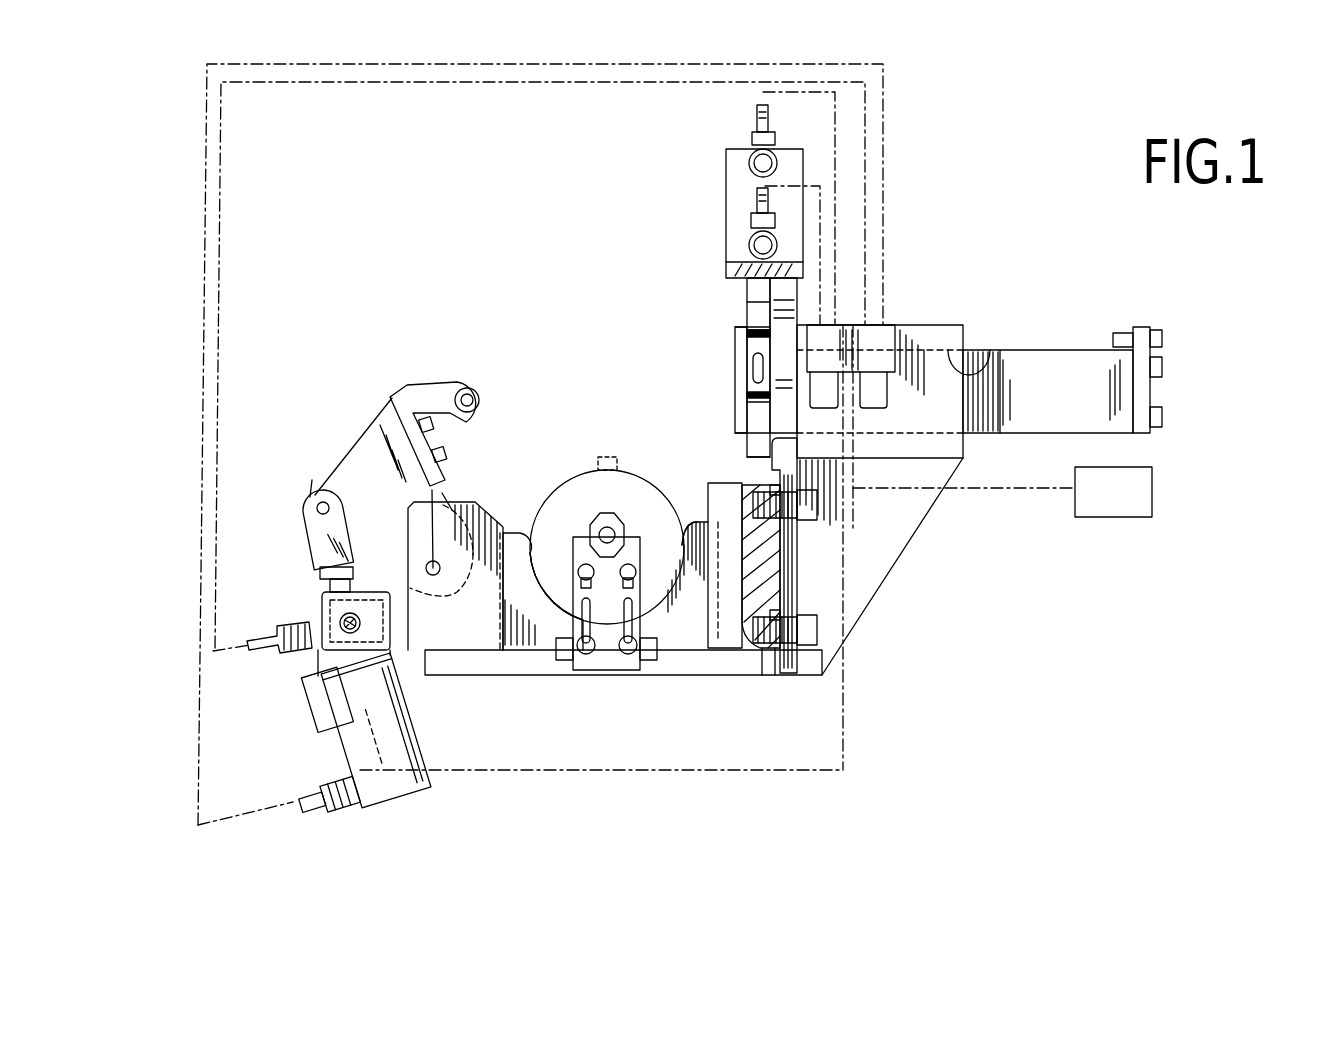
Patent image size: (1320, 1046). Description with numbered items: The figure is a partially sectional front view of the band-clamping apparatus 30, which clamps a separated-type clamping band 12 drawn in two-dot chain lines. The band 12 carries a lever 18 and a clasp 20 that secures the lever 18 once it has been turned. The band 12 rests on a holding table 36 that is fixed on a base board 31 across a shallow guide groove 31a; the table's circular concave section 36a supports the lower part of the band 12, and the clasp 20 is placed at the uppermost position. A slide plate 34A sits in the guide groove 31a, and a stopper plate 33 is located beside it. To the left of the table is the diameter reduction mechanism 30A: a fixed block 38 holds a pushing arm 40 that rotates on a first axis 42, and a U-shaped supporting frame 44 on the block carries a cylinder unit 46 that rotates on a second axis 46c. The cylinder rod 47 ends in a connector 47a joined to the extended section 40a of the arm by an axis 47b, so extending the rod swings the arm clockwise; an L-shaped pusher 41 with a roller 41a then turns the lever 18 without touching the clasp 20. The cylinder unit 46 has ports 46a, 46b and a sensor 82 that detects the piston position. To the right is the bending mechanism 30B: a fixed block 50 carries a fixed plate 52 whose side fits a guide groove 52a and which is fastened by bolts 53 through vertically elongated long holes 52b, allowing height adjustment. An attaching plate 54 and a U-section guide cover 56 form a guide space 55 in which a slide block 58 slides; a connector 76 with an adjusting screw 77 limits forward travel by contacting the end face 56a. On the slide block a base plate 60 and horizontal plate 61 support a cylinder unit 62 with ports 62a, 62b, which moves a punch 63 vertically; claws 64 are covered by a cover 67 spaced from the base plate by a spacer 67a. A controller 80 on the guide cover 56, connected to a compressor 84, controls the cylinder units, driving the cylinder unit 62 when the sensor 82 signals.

The clamping band 12 is at (540, 530).
The lever 18 is at (560, 478).
The clasp 20 is at (612, 457).
The band-clamping apparatus 30 is at (1037, 176).
The diameter reduction mechanism 30A is at (320, 378).
The bending mechanism 30B is at (941, 215).
The base board 31 is at (720, 648).
The guide groove 31a is at (570, 650).
The stopper plate 33 is at (615, 672).
The slide plate 34A is at (520, 655).
The holding table 36 is at (690, 640).
The circular concave section 36a is at (686, 530).
The fixed block 38 is at (488, 650).
The pushing arm 40 is at (362, 438).
The extended section 40a is at (330, 472).
The L-shaped pusher 41 is at (405, 390).
The roller 41a is at (472, 390).
The first axis 42 is at (437, 580).
The supporting frame 44 is at (322, 585).
The cylinder unit 46 is at (418, 716).
The port 46a is at (340, 806).
The port 46b is at (288, 648).
The second axis 46c is at (342, 622).
The cylinder rod 47 is at (308, 547).
The connector 47a is at (318, 505).
The axis 47b is at (308, 494).
The fixed block 50 is at (757, 648).
The fixed plate 52 is at (792, 665).
The guide groove 52a is at (778, 655).
The long hole 52b is at (795, 655).
The bolt 53 is at (815, 518).
The attaching plate 54 is at (878, 575).
The guide space 55 is at (1010, 360).
The guide cover 56 is at (945, 327).
The end face 56a is at (975, 370).
The slide block 58 is at (1037, 433).
The base plate 60 is at (760, 300).
The horizontal plate 61 is at (725, 270).
The cylinder unit 62 is at (730, 158).
The port 62a is at (752, 138).
The port 62b is at (752, 222).
The punch 63 is at (745, 327).
The claw 64 is at (745, 437).
The cover 67 is at (755, 370).
The spacer 67a is at (748, 340).
The connector 76 is at (1141, 327).
The adjusting screw 77 is at (1158, 330).
The controller 80 is at (900, 327).
The sensor 82 is at (306, 708).
The compressor 84 is at (1108, 517).